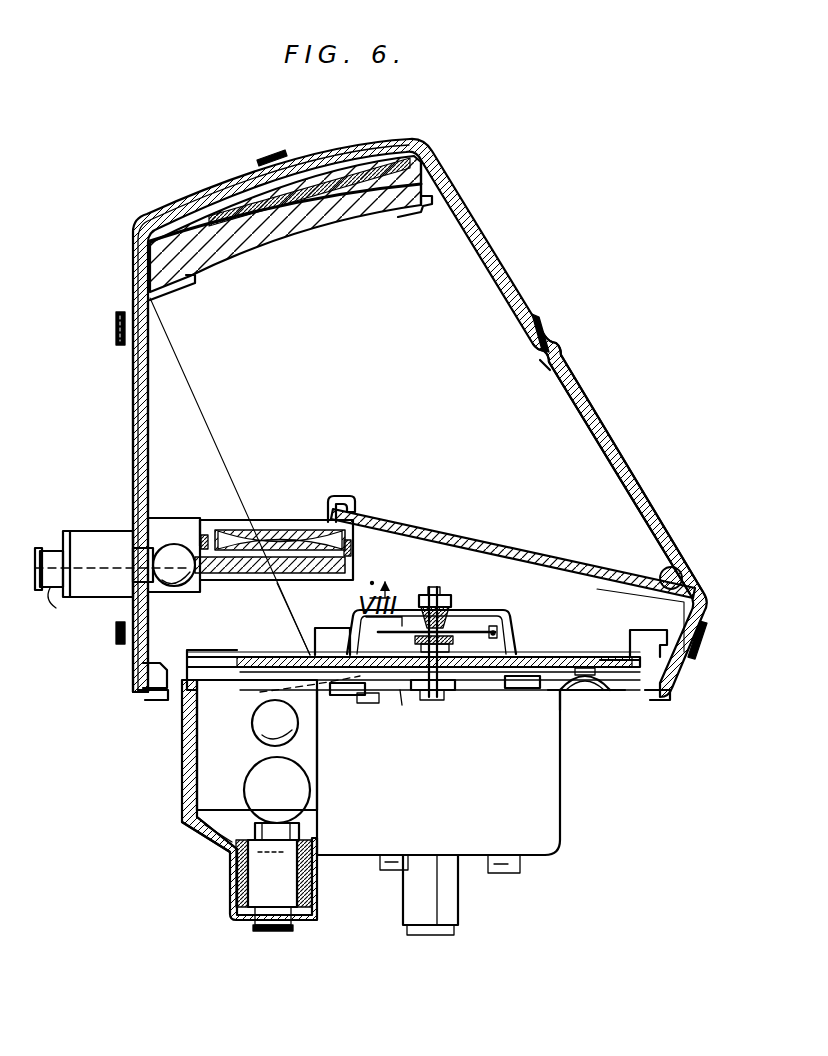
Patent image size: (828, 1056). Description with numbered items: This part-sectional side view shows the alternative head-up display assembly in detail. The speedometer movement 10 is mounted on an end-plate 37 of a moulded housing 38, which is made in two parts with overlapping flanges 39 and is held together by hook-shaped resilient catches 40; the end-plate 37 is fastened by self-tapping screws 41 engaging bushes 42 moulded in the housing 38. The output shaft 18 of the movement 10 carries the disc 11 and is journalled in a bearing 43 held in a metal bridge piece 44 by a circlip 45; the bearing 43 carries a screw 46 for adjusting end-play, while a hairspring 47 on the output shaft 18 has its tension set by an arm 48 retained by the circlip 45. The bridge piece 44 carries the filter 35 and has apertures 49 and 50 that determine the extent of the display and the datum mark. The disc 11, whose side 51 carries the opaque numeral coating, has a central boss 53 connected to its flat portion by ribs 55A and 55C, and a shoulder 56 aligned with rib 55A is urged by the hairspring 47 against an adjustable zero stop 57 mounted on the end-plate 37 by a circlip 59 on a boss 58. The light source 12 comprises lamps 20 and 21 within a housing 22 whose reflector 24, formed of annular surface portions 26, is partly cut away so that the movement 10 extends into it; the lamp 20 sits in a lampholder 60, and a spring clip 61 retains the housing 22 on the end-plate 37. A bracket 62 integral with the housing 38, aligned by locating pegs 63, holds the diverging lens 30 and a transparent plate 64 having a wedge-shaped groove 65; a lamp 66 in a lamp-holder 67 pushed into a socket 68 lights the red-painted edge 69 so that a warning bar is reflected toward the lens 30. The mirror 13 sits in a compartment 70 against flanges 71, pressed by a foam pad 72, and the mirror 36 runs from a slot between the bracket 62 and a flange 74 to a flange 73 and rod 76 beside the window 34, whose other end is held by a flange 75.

The speedometer movement 10 is at (558, 830).
The disc 11 is at (257, 743).
The light source 12 is at (176, 760).
The mirror 13 is at (236, 250).
The output shaft 18 is at (414, 702).
The lamp 20 is at (258, 776).
The lamp 21 is at (258, 724).
The housing 22 is at (184, 822).
The reflector 24 is at (226, 820).
The annular surface portions 26 is at (214, 846).
The diverging lens 30 is at (242, 530).
The window 34 is at (598, 432).
The filter 35 is at (226, 650).
The mirror 36 is at (490, 546).
The end-plate 37 is at (596, 692).
The moulded housing 38 is at (128, 380).
The flanges 39 is at (140, 418).
The resilient catches 40 is at (271, 150).
The self-tapping screws 41 is at (150, 700).
The bushes 42 is at (162, 650).
The bearing 43 is at (448, 606).
The bridge piece 44 is at (536, 654).
The circlip 45 is at (424, 592).
The screw 46 is at (435, 592).
The hairspring 47 is at (500, 612).
The arm 48 is at (474, 628).
The aperture 49 is at (278, 656).
The aperture 50 is at (298, 650).
The side of the disc 51 is at (582, 656).
The boss 53 is at (352, 698).
The rib 55A is at (414, 692).
The rib 55C is at (299, 691).
The shoulder 56 is at (472, 704).
The adjustable zero stop 57 is at (518, 694).
The boss 58 is at (576, 702).
The circlip 59 is at (546, 692).
The lampholder 60 is at (252, 890).
The spring clip 61 is at (326, 858).
The bracket 62 is at (160, 516).
The locating pegs 63 is at (206, 534).
The transparent plate 64 is at (276, 552).
The wedge-shaped groove 65 is at (242, 576).
The lamp 66 is at (176, 544).
The lamp-holder 67 is at (74, 530).
The socket 68 is at (106, 530).
The edge of the arcuate recess 69 is at (168, 588).
The compartment 70 is at (430, 200).
The flanges 71 is at (168, 286).
The pad 72 is at (238, 190).
The flange 73 is at (622, 592).
The flange 74 is at (340, 498).
The flange 75 is at (538, 368).
The rod 76 is at (662, 572).